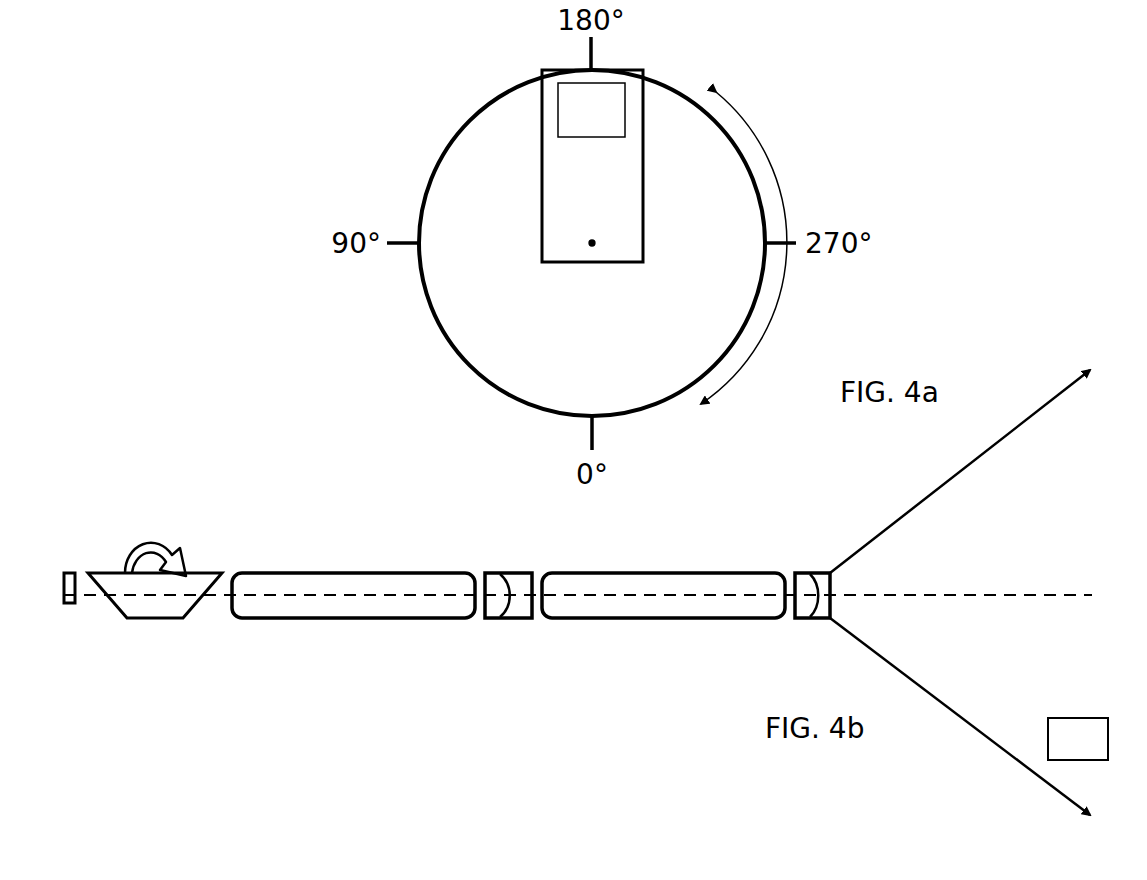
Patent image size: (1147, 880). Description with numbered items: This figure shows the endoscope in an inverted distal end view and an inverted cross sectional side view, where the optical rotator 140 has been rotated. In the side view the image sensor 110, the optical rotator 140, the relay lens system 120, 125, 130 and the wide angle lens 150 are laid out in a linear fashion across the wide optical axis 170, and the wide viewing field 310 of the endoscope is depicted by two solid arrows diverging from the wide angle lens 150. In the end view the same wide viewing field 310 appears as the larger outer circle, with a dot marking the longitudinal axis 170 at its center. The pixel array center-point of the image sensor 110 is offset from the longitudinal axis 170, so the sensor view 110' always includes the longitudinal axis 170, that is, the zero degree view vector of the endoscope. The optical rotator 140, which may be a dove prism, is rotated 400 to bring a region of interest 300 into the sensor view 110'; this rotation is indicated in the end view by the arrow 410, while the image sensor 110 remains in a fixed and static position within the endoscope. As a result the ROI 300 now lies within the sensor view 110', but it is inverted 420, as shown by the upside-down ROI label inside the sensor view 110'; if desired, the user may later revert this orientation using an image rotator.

In FIG. 4B, the image sensor 110 is at (70, 628).
In FIG. 4A, the sensor view 110' is at (510, 166).
In FIG. 4B, the relay lens system 120 is at (318, 625).
In FIG. 4B, the relay lens system 125 is at (493, 623).
In FIG. 4B, the relay lens system 130 is at (655, 625).
In FIG. 4B, the optical rotator 140 is at (152, 625).
In FIG. 4B, the wide angle lens 150 is at (802, 623).
In FIG. 4A, the optical axis 170 is at (589, 243).
In FIG. 4B, the optical axis 170 is at (994, 597).
In FIG. 4B, the region of interest 300 is at (1092, 710).
In FIG. 4A, the wide viewing field 310 is at (423, 206).
In FIG. 4B, the wide viewing field 310 is at (1035, 415).
In FIG. 4B, the rotation of the optical rotator 400 is at (150, 515).
In FIG. 4A, the arrow 410 is at (765, 145).
In FIG. 4A, the inversion of the ROI 420 is at (558, 114).